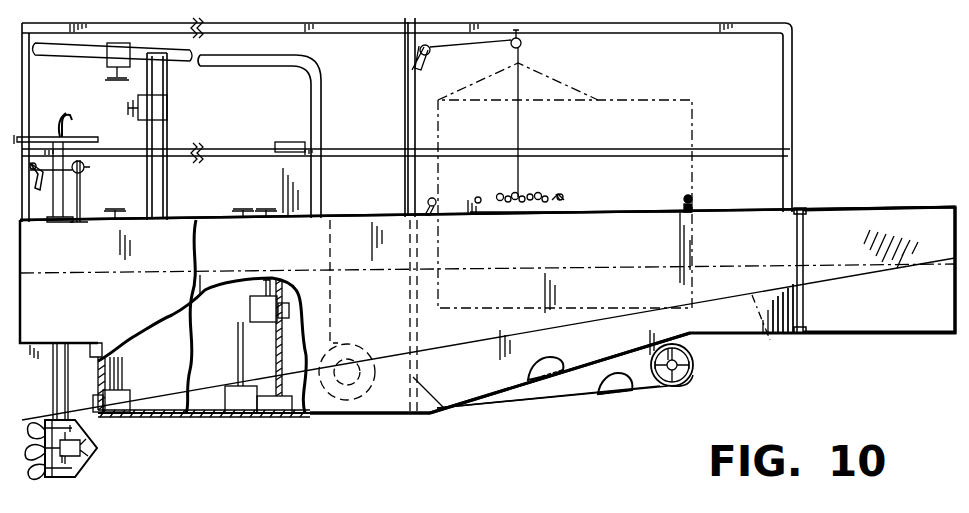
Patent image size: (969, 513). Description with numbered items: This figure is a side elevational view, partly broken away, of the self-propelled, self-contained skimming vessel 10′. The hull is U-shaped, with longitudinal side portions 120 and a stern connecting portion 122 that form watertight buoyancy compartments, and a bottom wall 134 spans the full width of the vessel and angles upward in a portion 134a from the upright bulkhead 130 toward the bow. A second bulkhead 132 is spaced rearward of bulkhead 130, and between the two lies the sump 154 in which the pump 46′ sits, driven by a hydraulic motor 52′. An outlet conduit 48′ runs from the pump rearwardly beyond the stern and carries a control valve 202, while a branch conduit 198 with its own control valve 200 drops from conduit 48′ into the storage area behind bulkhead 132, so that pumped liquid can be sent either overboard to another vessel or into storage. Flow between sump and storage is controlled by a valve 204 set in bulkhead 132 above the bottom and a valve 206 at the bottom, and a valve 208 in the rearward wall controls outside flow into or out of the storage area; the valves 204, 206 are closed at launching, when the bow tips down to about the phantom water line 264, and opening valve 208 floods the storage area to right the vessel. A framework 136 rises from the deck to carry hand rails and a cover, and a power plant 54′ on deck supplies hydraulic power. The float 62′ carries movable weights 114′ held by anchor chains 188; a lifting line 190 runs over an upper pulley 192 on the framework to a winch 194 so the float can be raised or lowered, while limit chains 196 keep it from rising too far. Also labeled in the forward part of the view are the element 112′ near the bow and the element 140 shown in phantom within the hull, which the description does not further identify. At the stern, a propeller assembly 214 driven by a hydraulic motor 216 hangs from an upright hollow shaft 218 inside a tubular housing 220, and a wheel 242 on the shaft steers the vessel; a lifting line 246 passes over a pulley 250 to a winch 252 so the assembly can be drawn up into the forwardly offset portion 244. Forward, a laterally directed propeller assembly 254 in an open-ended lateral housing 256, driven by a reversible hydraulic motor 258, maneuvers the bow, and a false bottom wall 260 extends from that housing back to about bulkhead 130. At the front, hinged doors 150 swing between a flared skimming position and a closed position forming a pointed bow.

The vessel 10′ is at (740, 228).
The pump 46′ is at (371, 398).
The outlet conduit 48′ is at (245, 62).
The hydraulic motor 52′ is at (343, 390).
The power plant 54′ is at (298, 142).
The float 62′ is at (654, 202).
The bow section 112′ is at (830, 262).
The weights 114′ is at (562, 196).
The longitudinal side portions 120 is at (213, 228).
The connecting portion 122 is at (72, 269).
The upright bulkhead 130 is at (434, 412).
The bulkhead 132 is at (273, 414).
The bottom wall 134 is at (168, 415).
The upwardly angled portion of bottom wall 134a is at (542, 382).
The framework 136 is at (343, 28).
The hidden compartment 140 is at (476, 211).
The doors 150 is at (905, 312).
The sump 154 is at (302, 413).
The anchor chains 188 is at (510, 195).
The lifting line 190 is at (513, 55).
The upper pulley 192 is at (522, 47).
The winch 194 is at (436, 71).
The limit chains 196 is at (428, 202).
The branch conduit 198 is at (165, 178).
The control valve 200 is at (162, 108).
The control valve 202 is at (112, 62).
The control valve 204 is at (258, 298).
The control valve 206 is at (236, 415).
The control valve 208 is at (122, 412).
The propeller assembly 214 is at (38, 473).
The hydraulic motor 216 is at (87, 463).
The upright hollow shaft 218 is at (58, 142).
The tubular housing 220 is at (62, 345).
The wheel 242 is at (95, 127).
The offset portion 244 is at (96, 352).
The lifting line 246 is at (78, 216).
The upper pulley 250 is at (86, 168).
The winch 252 is at (44, 171).
The forward laterally directed propeller assembly 254 is at (694, 364).
The lateral tubular housing 256 is at (679, 387).
The reversible hydraulic motor 258 is at (688, 355).
The false bottom wall 260 is at (621, 396).
The phantom line 264 is at (777, 331).